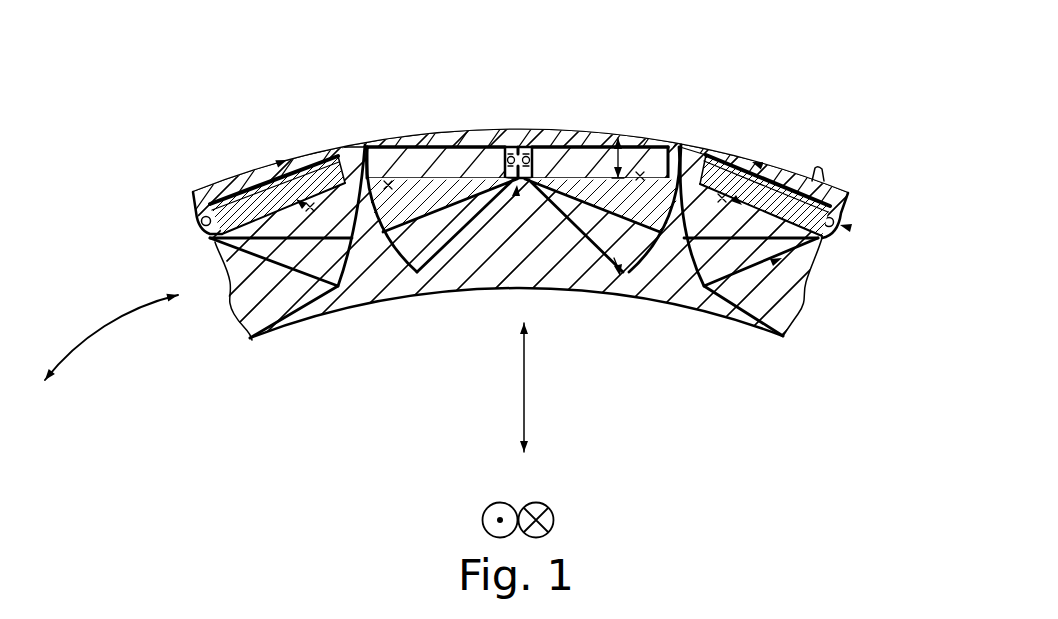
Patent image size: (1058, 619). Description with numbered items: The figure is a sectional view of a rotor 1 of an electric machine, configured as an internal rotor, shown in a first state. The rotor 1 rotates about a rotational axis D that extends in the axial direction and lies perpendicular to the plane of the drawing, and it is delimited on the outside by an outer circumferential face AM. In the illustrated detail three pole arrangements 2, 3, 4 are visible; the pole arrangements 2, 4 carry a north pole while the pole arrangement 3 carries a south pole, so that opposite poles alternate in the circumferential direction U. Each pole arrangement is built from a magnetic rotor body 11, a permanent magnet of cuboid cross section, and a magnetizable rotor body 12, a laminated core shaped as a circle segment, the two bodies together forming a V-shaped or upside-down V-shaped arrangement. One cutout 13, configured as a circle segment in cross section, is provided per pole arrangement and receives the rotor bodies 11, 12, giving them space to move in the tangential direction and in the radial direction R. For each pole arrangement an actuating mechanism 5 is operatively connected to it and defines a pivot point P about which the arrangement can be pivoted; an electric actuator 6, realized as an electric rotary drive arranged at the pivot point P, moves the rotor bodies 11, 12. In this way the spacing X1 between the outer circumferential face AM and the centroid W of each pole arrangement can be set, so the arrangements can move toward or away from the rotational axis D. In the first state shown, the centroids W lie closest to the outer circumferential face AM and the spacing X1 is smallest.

The rotor 1 is at (786, 73).
The pole arrangement 2 is at (249, 324).
The pole arrangement 3 is at (479, 301).
The pole arrangement 4 is at (783, 330).
The actuating mechanism 5 is at (531, 121).
The electric actuator 6 is at (549, 110).
The magnetic rotor body 11 is at (503, 140).
The magnetizable rotor body 12 is at (514, 309).
The cutout 13 is at (803, 248).
The centroid W is at (373, 158).
The spacing X1 is at (278, 163).
The outer circumferential face AM is at (820, 170).
The pivot point P is at (848, 227).
The radial direction R is at (528, 388).
The circumferential direction U is at (111, 358).
The rotational axis D is at (462, 510).